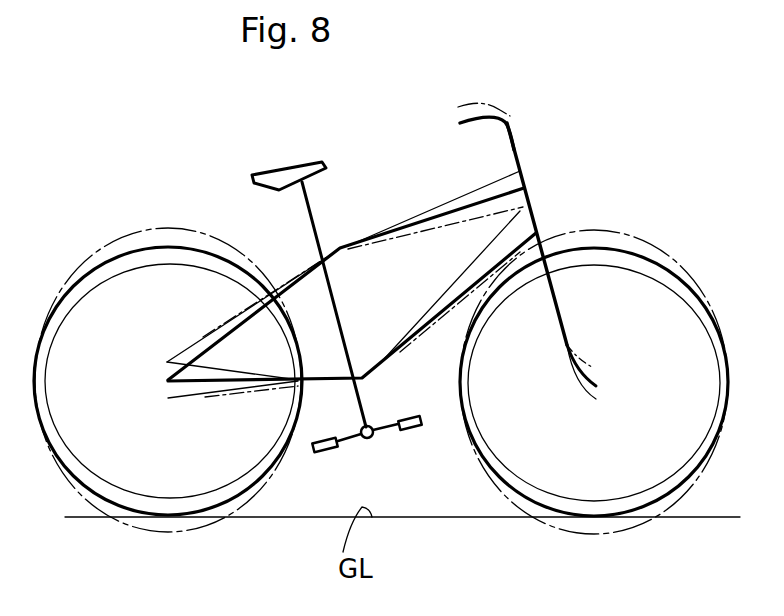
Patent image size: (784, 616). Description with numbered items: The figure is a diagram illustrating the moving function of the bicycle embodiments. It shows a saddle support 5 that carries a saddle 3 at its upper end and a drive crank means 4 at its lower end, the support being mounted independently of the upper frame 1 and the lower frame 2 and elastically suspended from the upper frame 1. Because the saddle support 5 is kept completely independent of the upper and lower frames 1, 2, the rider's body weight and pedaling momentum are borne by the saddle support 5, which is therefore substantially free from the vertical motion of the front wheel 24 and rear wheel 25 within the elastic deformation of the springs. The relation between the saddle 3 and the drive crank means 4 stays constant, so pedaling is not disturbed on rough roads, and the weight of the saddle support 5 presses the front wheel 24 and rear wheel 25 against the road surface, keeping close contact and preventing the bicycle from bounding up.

The upper frame 1 is at (453, 209).
The lower frame 2 is at (452, 305).
The saddle 3 is at (293, 162).
The drive crank means 4 is at (407, 432).
The saddle support 5 is at (313, 208).
The front wheel 24 is at (623, 250).
The rear wheel 25 is at (105, 256).